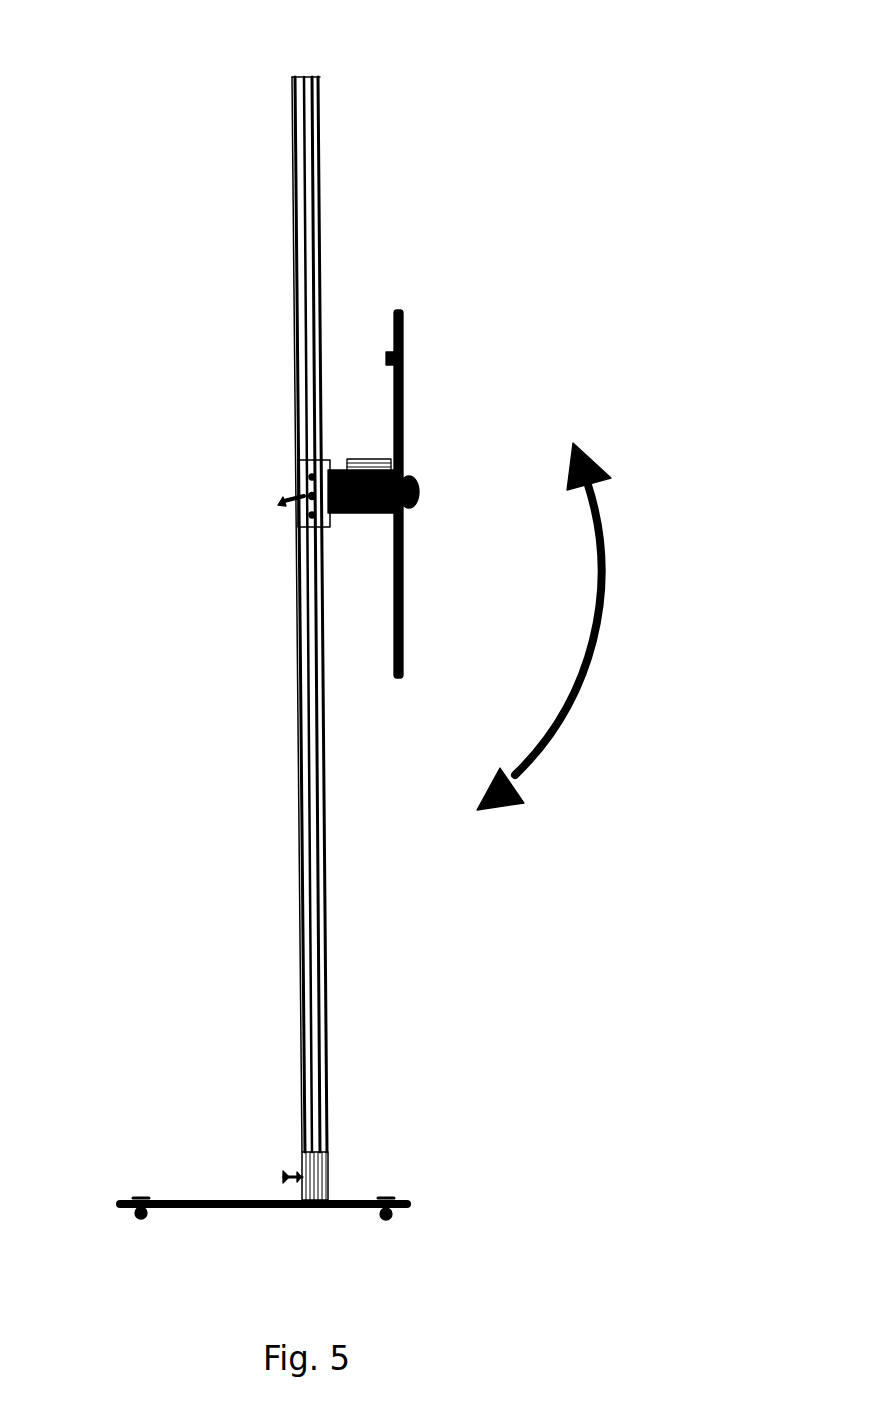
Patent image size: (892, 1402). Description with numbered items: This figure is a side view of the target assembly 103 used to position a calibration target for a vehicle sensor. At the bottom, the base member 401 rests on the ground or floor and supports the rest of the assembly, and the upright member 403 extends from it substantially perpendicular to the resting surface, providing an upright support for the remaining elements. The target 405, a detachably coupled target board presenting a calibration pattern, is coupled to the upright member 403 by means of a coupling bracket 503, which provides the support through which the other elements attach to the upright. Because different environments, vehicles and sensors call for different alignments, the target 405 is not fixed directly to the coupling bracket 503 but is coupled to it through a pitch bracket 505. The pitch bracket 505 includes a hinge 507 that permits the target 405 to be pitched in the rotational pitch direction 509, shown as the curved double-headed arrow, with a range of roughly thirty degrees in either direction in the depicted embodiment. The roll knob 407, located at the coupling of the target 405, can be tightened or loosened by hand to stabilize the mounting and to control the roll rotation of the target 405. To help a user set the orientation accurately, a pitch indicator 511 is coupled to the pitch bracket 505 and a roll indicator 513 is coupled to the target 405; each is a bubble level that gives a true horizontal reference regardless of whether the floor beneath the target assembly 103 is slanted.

The target assembly 103 is at (569, 115).
The base member 401 is at (240, 1198).
The upright member 403 is at (318, 150).
The target 405 is at (396, 306).
The roll knob 407 is at (410, 475).
The coupling bracket 503 is at (297, 470).
The pitch bracket 505 is at (355, 518).
The hinge 507 is at (333, 482).
The rotational pitch direction 509 is at (570, 695).
The pitch indicator 511 is at (380, 460).
The roll indicator 513 is at (389, 350).